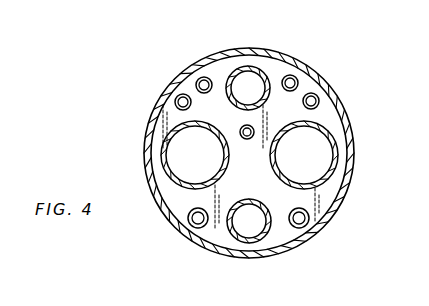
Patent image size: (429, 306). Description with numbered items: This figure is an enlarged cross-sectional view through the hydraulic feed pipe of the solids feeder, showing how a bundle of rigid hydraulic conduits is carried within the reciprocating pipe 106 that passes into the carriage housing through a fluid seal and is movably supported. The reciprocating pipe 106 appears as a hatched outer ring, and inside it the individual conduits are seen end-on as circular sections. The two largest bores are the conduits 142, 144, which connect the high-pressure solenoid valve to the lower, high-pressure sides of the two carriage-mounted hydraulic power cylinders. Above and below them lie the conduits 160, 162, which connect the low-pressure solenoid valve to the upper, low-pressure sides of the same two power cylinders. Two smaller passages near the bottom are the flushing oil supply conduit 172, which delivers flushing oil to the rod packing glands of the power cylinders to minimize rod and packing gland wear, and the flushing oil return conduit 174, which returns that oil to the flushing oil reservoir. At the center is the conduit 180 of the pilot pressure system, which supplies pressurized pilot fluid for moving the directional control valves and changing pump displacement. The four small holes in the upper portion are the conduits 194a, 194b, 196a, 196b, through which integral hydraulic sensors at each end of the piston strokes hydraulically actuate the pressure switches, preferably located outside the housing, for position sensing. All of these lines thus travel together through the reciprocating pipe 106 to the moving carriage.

The reciprocating pipe 106 is at (342, 103).
The conduit 142 is at (160, 147).
The conduit 144 is at (338, 154).
The conduit 160 is at (248, 66).
The conduit 162 is at (240, 241).
The flushing oil supply conduit 172 is at (308, 226).
The flushing oil return conduit 174 is at (190, 224).
The conduit 180 is at (254, 131).
The conduit 194a is at (175, 103).
The conduit 194b is at (197, 80).
The conduit 196a is at (296, 77).
The conduit 196b is at (318, 99).